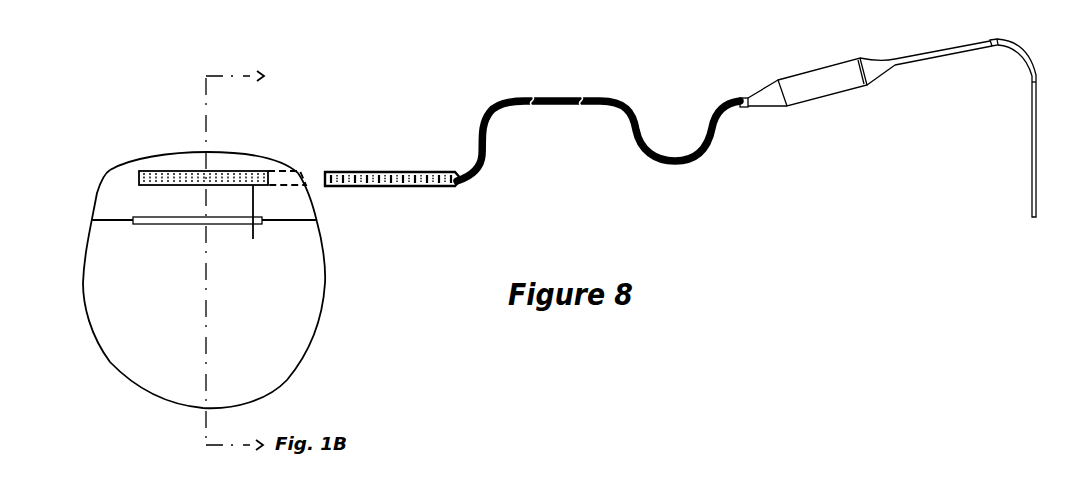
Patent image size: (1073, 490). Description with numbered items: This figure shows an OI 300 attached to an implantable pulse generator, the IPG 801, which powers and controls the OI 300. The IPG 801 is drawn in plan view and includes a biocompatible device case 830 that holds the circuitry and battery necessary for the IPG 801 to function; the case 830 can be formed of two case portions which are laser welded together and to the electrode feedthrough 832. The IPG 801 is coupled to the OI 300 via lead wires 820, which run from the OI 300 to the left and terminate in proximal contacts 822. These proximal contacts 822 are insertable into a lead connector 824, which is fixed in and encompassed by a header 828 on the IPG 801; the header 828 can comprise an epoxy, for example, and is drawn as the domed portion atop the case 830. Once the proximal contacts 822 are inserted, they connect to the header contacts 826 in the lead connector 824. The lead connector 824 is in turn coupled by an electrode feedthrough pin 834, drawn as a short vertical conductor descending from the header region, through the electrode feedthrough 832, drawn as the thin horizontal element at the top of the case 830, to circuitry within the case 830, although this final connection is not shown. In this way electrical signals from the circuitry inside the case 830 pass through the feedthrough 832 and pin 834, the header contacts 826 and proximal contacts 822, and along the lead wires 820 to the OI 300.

The implantable pulse generator 801 is at (150, 112).
The header contacts 826 is at (143, 172).
The header 828 is at (235, 157).
The electrode feedthrough 832 is at (167, 227).
The electrode feedthrough pin 834 is at (285, 250).
The lead connector 824 is at (296, 204).
The device case 830 is at (307, 312).
The proximal contacts 822 is at (399, 151).
The lead wires 820 is at (482, 94).
The OI 300 is at (829, 30).